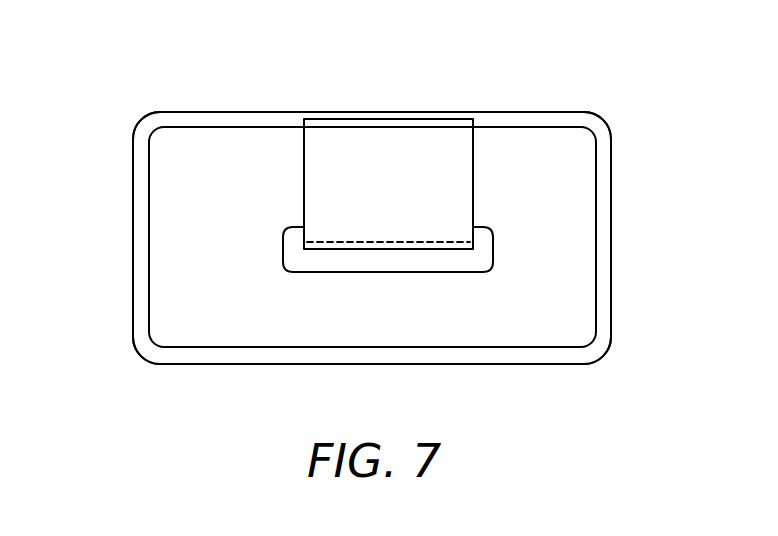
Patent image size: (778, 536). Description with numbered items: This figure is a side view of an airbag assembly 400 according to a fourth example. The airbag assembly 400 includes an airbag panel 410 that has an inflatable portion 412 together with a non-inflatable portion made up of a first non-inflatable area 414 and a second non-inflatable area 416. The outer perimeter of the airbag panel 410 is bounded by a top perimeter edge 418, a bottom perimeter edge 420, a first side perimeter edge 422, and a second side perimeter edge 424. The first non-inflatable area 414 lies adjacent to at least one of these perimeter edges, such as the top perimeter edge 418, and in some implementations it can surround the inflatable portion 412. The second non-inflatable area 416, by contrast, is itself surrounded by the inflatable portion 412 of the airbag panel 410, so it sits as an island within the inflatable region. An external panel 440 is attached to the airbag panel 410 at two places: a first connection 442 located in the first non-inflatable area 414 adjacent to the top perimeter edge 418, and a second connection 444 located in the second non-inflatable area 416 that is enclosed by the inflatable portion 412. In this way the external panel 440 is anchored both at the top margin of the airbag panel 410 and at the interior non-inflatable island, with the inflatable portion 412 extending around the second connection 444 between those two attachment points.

The airbag assembly 400 is at (127, 62).
The airbag panel 410 is at (133, 168).
The inflatable portion 412 is at (157, 205).
The first non-inflatable area 414 is at (140, 246).
The second non-inflatable area 416 is at (485, 246).
The top perimeter edge 418 is at (538, 110).
The bottom perimeter edge 420 is at (189, 364).
The first side perimeter edge 422 is at (133, 282).
The second side perimeter edge 424 is at (611, 168).
The external panel 440 is at (302, 146).
The first connection 442 is at (441, 125).
The second connection 444 is at (420, 242).